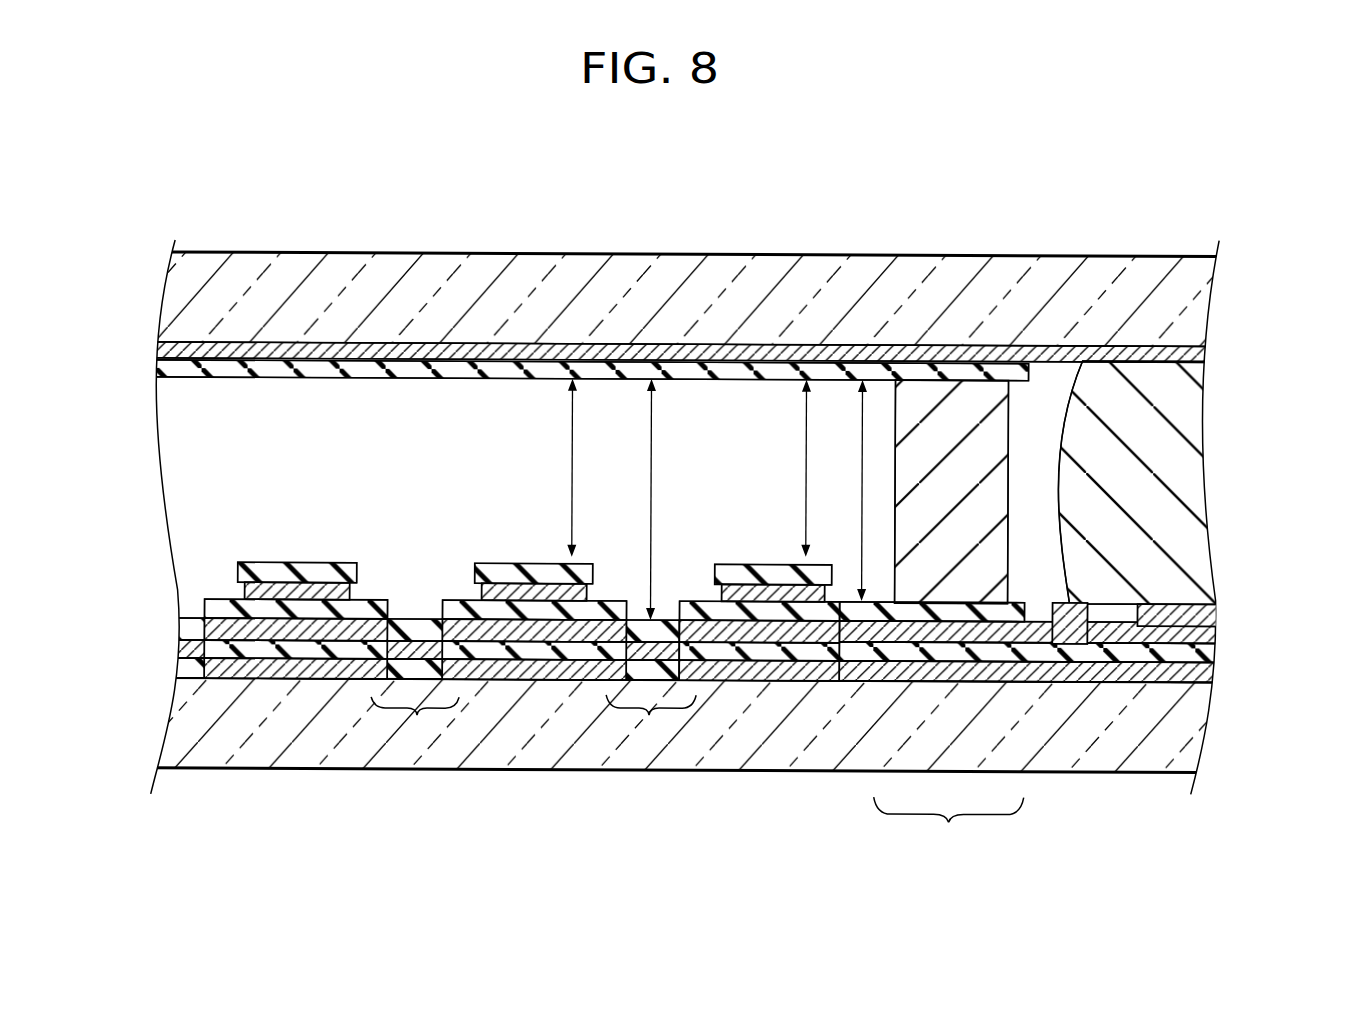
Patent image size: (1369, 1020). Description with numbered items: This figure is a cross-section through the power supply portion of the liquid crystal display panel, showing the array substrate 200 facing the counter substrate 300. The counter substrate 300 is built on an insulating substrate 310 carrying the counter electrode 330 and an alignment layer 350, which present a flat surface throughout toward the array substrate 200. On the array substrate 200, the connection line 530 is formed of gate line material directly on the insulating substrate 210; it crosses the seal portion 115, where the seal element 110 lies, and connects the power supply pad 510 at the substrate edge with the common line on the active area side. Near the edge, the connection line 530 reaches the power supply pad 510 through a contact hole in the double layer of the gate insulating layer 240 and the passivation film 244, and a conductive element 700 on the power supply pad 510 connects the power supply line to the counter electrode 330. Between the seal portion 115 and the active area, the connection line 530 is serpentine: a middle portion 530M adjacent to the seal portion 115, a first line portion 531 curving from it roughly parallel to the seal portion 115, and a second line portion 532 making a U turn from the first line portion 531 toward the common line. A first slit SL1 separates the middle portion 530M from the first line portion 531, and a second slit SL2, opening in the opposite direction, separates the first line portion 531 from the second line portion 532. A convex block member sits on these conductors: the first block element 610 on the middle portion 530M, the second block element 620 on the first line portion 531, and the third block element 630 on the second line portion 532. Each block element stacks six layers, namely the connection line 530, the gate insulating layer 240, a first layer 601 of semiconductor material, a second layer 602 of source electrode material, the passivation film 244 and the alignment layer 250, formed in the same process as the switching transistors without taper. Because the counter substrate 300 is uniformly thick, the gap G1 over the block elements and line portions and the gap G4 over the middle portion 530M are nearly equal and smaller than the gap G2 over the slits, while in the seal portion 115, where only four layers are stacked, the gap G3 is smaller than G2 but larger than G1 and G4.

The counter substrate 300 is at (708, 304).
The insulating substrate 310 is at (176, 299).
The counter electrode 330 is at (158, 350).
The alignment layer 350 is at (545, 381).
The seal element 110 is at (950, 418).
The gap G1 is at (572, 423).
The gap G2 is at (647, 423).
The gap G3 is at (860, 423).
The gap G4 is at (804, 423).
The conductive element 700 is at (1185, 531).
The first layer 601 is at (286, 564).
The second layer 602 is at (318, 599).
The alignment layer 250 is at (178, 622).
The passivation film 244 is at (178, 647).
The gate insulating layer 240 is at (178, 667).
The insulating substrate 210 is at (174, 742).
The power supply pad 510 is at (1216, 605).
The connection line 530 is at (1216, 672).
The middle portion 530M is at (733, 664).
The second line portion 532 is at (268, 668).
The first line portion 531 is at (497, 668).
The third block element 630 is at (316, 673).
The second block element 620 is at (585, 652).
The first block element 610 is at (788, 658).
The first slit SL1 is at (650, 714).
The second slit SL2 is at (418, 715).
The seal portion 115 is at (948, 827).
The array substrate 200 is at (692, 685).